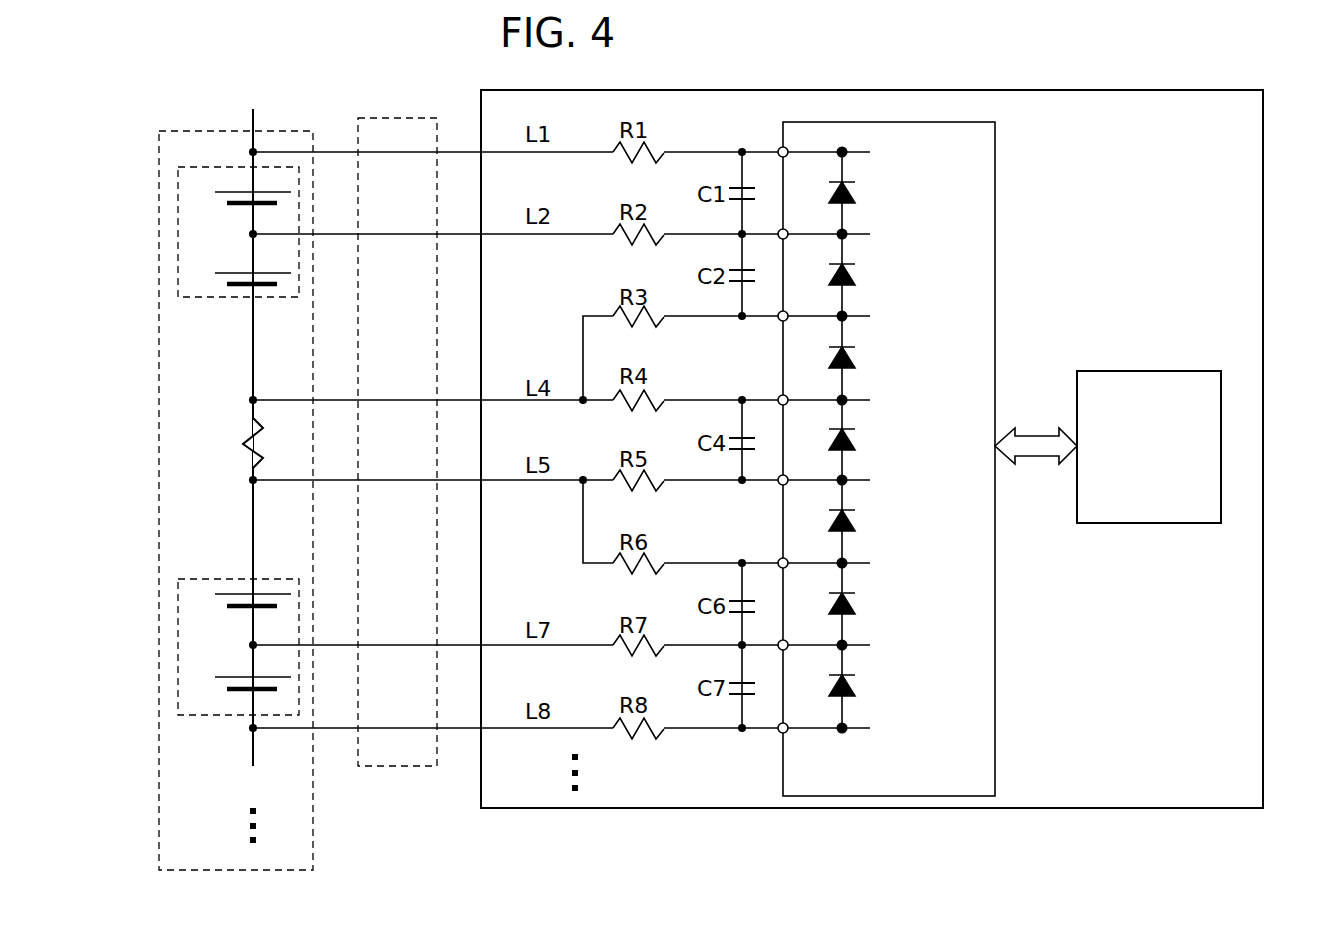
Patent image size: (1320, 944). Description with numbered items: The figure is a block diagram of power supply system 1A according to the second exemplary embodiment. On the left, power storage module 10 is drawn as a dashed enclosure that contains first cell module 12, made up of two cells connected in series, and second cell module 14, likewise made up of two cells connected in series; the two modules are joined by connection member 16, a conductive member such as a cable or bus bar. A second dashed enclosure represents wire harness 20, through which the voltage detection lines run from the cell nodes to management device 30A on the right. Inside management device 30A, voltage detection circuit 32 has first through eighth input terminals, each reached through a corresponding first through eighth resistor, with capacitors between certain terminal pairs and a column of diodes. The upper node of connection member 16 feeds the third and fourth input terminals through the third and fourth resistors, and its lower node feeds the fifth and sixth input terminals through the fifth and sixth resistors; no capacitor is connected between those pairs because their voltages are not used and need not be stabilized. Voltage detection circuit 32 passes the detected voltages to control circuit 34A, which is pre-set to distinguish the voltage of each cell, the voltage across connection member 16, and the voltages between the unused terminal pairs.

The power supply system 1A is at (777, 882).
The power storage module 10 is at (159, 131).
The first cell module 12 is at (178, 297).
The second cell module 14 is at (178, 579).
The connection member 16 is at (243, 443).
The wire harness 20 is at (371, 118).
The management device 30A is at (1221, 91).
The voltage detection circuit 32 is at (995, 122).
The control circuit 34A is at (1152, 371).